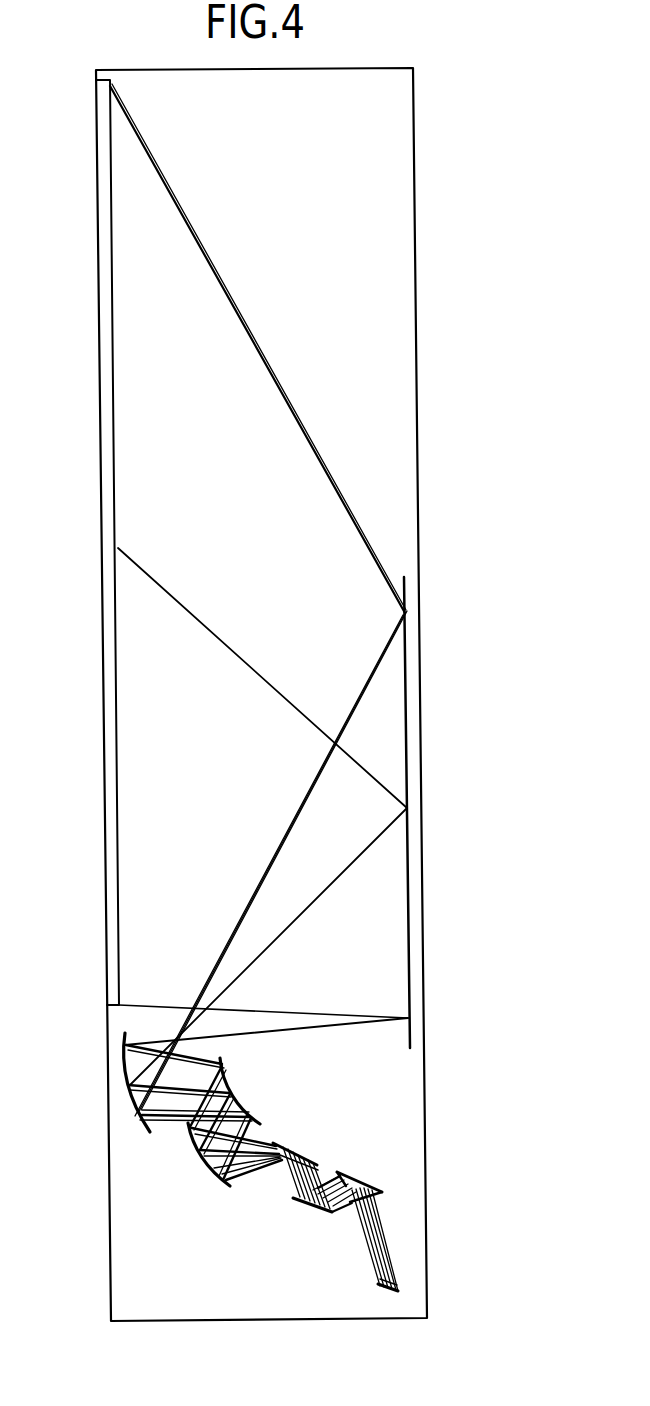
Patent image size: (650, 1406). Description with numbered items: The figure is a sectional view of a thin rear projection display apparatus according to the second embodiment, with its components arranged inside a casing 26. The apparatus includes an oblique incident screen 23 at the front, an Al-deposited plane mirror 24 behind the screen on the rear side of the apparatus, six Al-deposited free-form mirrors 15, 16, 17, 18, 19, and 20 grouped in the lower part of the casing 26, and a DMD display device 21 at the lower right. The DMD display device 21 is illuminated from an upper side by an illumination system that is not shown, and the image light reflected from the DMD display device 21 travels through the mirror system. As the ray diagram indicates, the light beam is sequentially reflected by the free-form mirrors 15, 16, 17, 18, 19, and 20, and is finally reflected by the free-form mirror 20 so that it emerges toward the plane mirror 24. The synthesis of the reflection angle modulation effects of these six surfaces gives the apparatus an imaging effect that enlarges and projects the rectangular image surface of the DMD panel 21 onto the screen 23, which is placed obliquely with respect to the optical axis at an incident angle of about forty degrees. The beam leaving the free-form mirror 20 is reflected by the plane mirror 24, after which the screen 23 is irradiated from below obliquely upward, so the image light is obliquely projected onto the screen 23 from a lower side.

The free-form mirror 15 is at (363, 1175).
The free-form mirror 16 is at (310, 1204).
The free-form mirror 17 is at (292, 1151).
The free-form mirror 18 is at (207, 1153).
The free-form mirror 19 is at (234, 1084).
The free-form mirror 20 is at (125, 1110).
The DMD display device 21 is at (378, 1288).
The oblique incident screen 23 is at (103, 668).
The plane mirror 24 is at (408, 862).
The casing 26 is at (418, 443).